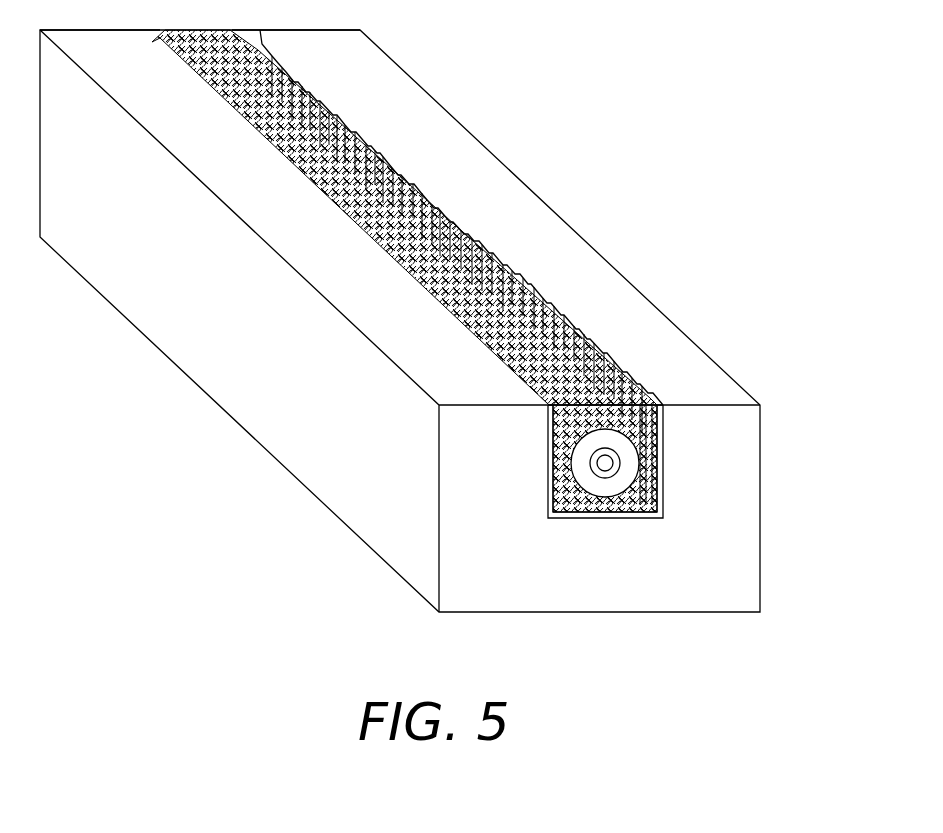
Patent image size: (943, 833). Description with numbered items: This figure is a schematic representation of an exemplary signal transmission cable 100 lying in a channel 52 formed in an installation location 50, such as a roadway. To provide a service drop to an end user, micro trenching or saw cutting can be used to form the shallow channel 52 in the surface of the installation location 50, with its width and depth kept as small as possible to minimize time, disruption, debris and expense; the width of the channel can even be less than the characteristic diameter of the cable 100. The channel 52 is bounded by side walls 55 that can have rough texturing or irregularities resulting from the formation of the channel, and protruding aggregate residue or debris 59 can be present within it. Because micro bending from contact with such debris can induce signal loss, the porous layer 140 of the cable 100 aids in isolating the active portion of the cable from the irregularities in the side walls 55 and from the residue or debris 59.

The installation location 50 is at (745, 366).
The channel 52 is at (663, 497).
The side walls 55 is at (468, 217).
The aggregate residue or debris 59 is at (563, 497).
The cable 100 is at (446, 175).
The porous layer 140 is at (525, 287).